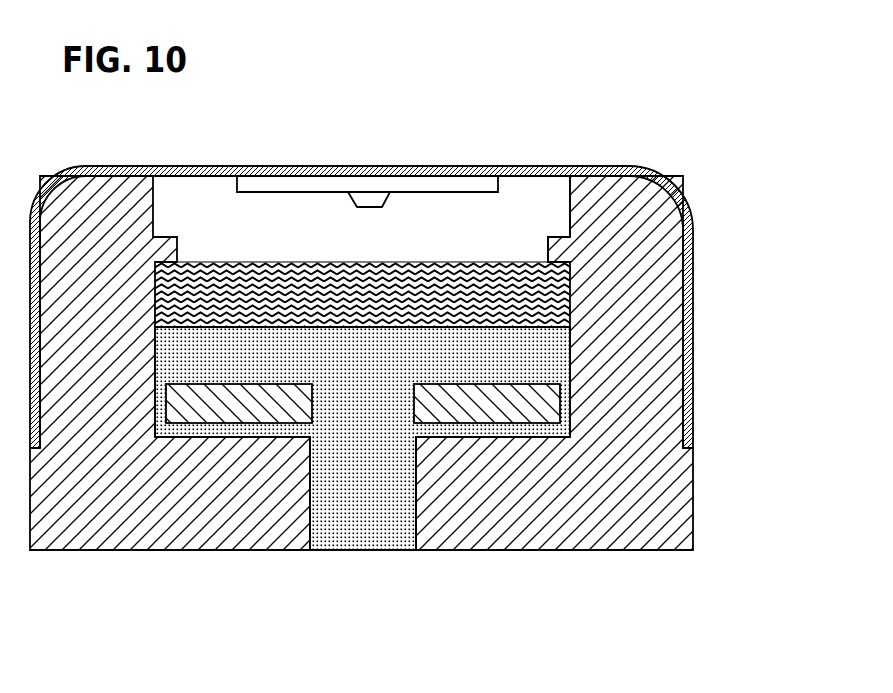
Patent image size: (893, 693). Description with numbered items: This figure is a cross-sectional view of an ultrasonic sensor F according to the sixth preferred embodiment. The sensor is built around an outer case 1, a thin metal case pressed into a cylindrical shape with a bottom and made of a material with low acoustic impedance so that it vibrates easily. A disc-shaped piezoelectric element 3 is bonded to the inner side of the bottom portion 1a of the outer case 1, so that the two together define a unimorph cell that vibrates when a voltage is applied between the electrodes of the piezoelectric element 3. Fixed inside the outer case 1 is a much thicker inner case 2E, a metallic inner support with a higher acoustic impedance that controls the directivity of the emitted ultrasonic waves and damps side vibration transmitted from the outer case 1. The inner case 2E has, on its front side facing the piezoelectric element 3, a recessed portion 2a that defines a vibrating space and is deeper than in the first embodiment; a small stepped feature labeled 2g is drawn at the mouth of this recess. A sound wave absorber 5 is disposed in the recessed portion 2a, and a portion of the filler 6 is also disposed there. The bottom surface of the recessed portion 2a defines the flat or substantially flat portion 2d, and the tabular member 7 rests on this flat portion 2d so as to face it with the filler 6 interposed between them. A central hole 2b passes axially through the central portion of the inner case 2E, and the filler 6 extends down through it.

The outer case 1 is at (692, 209).
The bottom portion 1a is at (313, 167).
The inner case 2E is at (660, 358).
The recessed portion 2a is at (571, 201).
The central hole 2b is at (418, 507).
The flat or substantially flat portion 2d is at (260, 427).
The step portion of yoke 2g is at (548, 248).
The piezoelectric element 3 is at (427, 189).
The sound wave absorber 5 is at (205, 262).
The filler 6 is at (353, 527).
The tabular member 7 is at (200, 416).
The ultrasonic sensor F is at (678, 167).